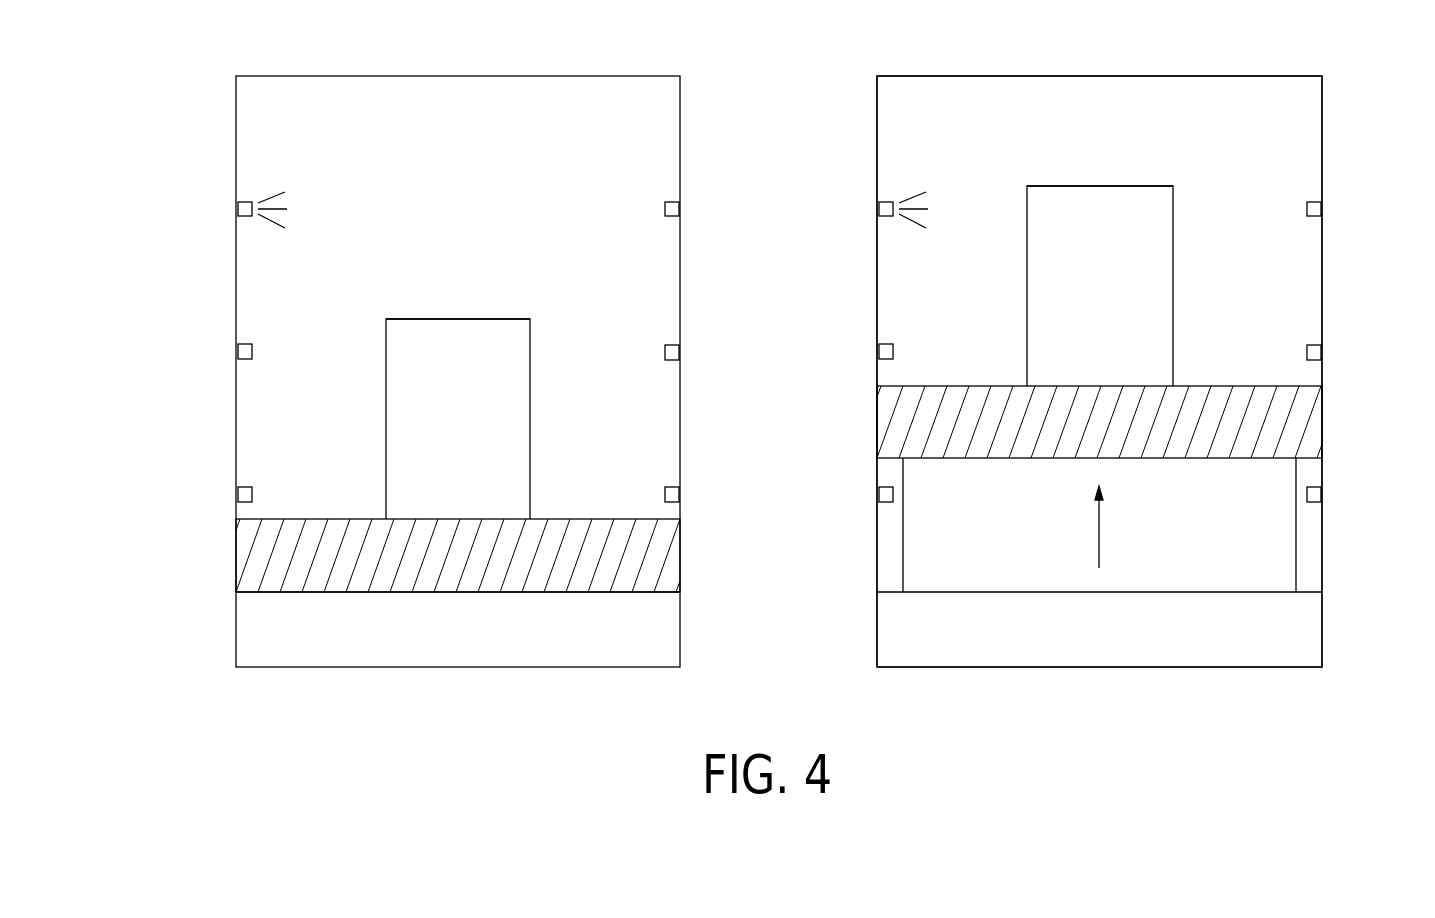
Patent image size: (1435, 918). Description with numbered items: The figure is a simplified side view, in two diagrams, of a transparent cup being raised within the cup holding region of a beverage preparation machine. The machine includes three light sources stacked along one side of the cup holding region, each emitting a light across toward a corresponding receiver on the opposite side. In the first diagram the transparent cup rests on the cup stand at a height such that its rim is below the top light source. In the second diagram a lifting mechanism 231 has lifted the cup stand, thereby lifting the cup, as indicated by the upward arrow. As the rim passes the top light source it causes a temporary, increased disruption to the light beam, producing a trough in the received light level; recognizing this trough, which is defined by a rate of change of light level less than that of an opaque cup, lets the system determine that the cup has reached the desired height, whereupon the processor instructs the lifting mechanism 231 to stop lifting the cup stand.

The lifting mechanism 231 is at (928, 552).